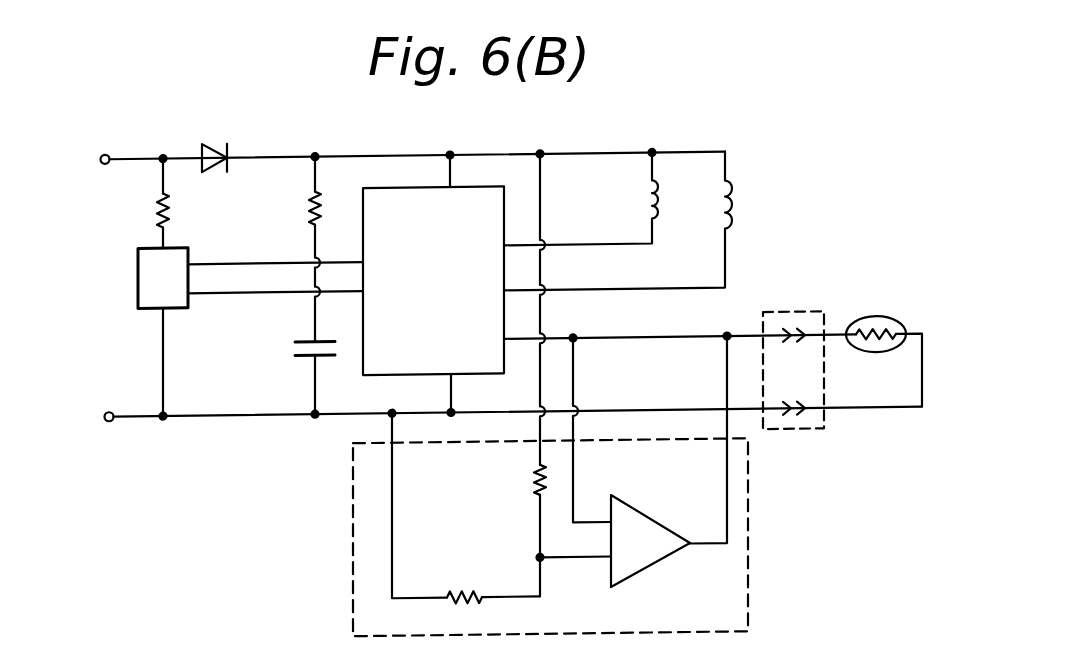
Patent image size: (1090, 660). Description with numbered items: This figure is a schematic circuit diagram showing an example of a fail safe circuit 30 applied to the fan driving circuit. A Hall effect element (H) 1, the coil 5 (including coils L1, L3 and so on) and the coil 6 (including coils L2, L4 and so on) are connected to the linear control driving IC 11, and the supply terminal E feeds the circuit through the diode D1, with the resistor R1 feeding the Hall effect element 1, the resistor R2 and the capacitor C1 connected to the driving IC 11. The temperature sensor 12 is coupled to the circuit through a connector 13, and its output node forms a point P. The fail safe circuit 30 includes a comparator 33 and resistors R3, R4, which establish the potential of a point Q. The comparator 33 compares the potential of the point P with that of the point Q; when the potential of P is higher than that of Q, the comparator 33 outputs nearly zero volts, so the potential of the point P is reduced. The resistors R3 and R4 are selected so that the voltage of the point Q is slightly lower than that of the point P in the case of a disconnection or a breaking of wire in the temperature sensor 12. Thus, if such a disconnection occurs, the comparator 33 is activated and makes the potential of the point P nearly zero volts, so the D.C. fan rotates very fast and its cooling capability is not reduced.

The Hall effect element 1 is at (188, 246).
The coil 5 is at (595, 198).
The coil 6 is at (629, 220).
The linear control driving IC 11 is at (507, 226).
The temperature sensor 12 is at (868, 321).
The connector 13 is at (766, 316).
The fail safe circuit 30 is at (575, 485).
The comparator 33 is at (652, 522).
The power supply terminal E is at (411, 141).
The Hall effect element H is at (138, 284).
The point P is at (573, 341).
The point Q is at (534, 557).
The diode D1 is at (212, 142).
The resistor R1 is at (143, 204).
The resistor R2 is at (291, 250).
The resistor R3 is at (517, 375).
The resistor R4 is at (466, 507).
The capacitor C1 is at (290, 378).